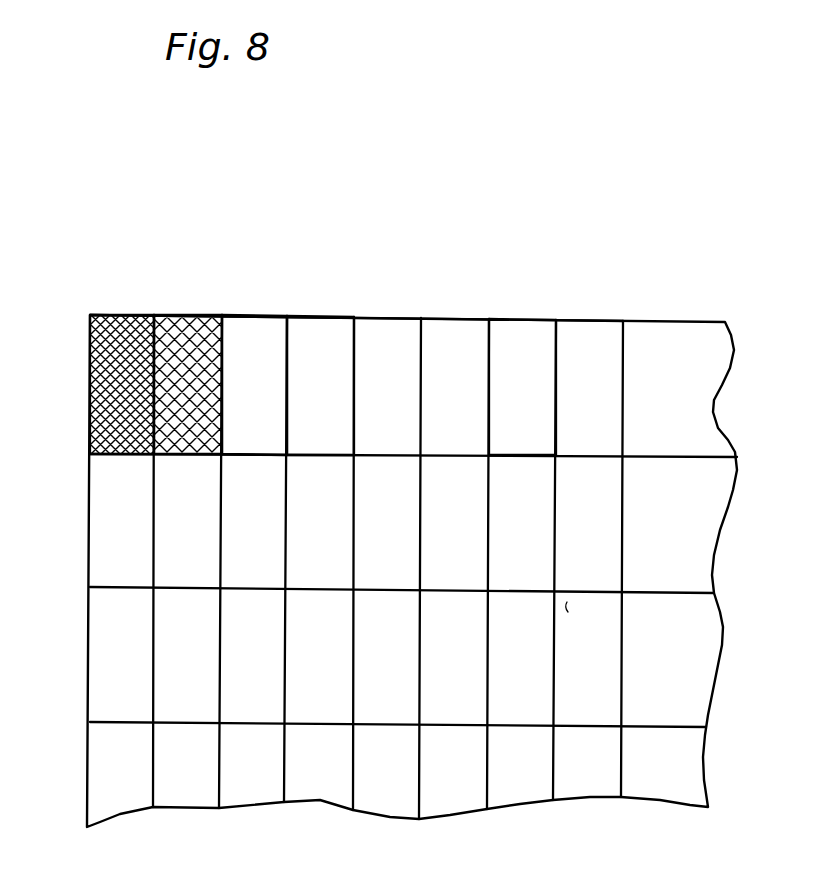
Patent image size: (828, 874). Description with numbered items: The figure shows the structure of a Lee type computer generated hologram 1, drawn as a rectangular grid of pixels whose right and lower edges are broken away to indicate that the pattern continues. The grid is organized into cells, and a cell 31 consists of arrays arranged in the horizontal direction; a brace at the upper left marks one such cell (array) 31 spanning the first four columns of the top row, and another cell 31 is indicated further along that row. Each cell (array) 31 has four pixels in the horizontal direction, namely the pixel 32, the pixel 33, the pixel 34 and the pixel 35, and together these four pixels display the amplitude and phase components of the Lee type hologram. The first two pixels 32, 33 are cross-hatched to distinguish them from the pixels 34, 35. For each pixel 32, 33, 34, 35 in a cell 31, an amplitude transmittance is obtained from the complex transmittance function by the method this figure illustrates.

The display panel 1 is at (607, 262).
The cell 31 is at (348, 310).
The pixel 32 is at (110, 352).
The pixel 33 is at (182, 358).
The pixel 34 is at (248, 355).
The pixel 35 is at (317, 357).